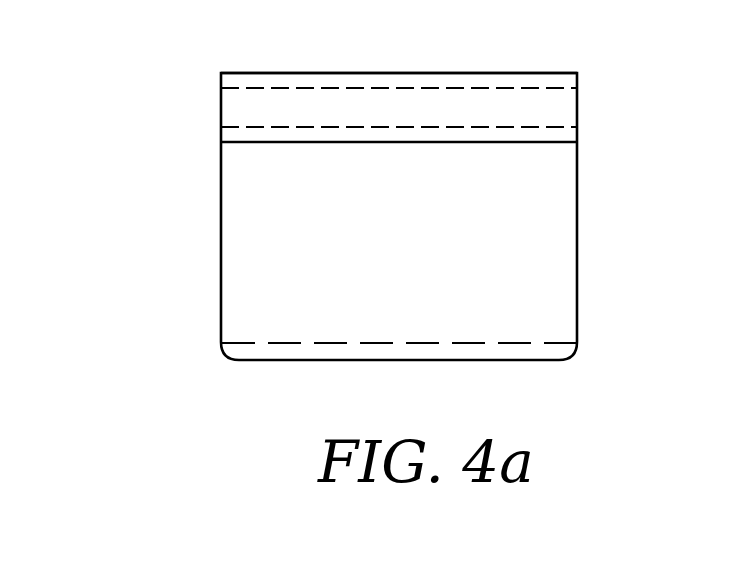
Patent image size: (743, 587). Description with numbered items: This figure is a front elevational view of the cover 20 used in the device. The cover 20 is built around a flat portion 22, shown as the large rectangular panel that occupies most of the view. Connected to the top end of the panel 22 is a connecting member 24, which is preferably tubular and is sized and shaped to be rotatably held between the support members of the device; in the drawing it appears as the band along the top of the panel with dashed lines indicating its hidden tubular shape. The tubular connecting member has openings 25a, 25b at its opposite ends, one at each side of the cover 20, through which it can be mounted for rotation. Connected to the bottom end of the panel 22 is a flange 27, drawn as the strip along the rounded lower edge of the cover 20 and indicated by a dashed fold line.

The cover 20 is at (275, 196).
The flat portion 22 is at (497, 255).
The connecting member 24 is at (414, 72).
The opening 25a is at (577, 100).
The opening 25b is at (233, 110).
The flange 27 is at (553, 352).